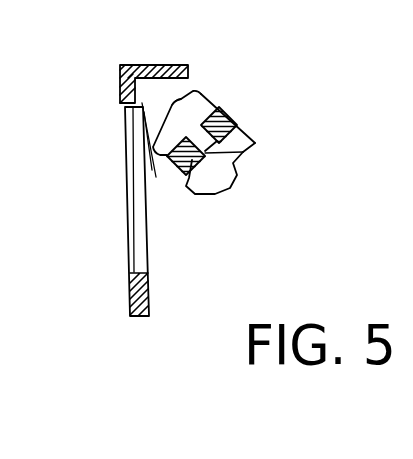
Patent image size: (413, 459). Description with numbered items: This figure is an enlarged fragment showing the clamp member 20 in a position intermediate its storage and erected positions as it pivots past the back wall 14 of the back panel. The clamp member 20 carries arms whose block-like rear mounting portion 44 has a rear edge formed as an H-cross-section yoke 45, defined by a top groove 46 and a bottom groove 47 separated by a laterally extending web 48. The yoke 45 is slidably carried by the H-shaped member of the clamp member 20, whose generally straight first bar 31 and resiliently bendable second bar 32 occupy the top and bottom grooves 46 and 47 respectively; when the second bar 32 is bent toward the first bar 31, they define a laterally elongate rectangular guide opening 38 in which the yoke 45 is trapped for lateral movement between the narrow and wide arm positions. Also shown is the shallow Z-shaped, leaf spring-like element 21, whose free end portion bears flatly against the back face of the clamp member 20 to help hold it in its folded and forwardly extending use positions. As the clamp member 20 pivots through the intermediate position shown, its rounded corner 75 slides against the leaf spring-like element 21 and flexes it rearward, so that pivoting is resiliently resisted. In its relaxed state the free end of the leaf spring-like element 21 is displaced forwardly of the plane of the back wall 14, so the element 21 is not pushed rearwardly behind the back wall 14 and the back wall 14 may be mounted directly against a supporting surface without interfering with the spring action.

The back wall 14 is at (119, 82).
The leaf spring-like element 21 is at (124, 158).
The rounded corner 75 is at (158, 152).
The web 48 is at (175, 152).
The second bar 32 is at (186, 178).
The H-cross-section yoke 45 is at (176, 100).
The top groove 46 is at (216, 107).
The first bar 31 is at (228, 116).
The clamp member 20 is at (260, 128).
The guide opening 38 is at (217, 155).
The rear mounting portion 44 is at (225, 165).
The bottom groove 47 is at (186, 180).